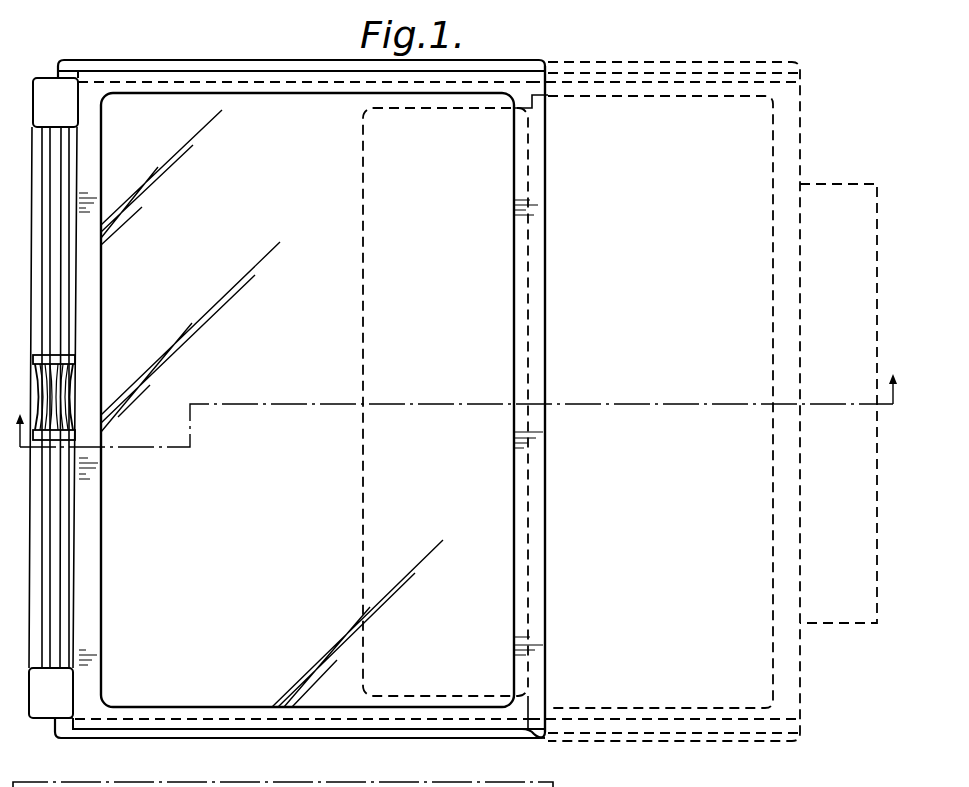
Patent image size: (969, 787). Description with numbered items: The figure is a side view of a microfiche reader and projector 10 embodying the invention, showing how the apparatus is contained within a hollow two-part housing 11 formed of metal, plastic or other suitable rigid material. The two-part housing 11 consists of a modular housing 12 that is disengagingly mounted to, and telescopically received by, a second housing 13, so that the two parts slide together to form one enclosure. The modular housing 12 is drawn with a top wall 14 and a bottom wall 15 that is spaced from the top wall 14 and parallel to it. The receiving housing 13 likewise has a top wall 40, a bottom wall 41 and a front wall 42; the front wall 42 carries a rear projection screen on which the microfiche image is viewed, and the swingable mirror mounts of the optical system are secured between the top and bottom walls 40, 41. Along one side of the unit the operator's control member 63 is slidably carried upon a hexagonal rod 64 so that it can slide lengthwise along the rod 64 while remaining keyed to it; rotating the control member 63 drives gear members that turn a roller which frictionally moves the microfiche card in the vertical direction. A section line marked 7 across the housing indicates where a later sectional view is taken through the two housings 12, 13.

The microfiche reader and projector 10 is at (487, 46).
The two-part housing 11 is at (440, 742).
The modular housing 12 is at (43, 703).
The housing 13 is at (538, 677).
The top wall 14 is at (43, 78).
The bottom wall 15 is at (52, 718).
The top wall 40 is at (548, 70).
The bottom wall 41 is at (524, 740).
The front wall 42 is at (543, 372).
The control member 63 is at (67, 383).
The hexagonal rod 64 is at (60, 536).
The section line 7- 7 is at (454, 401).